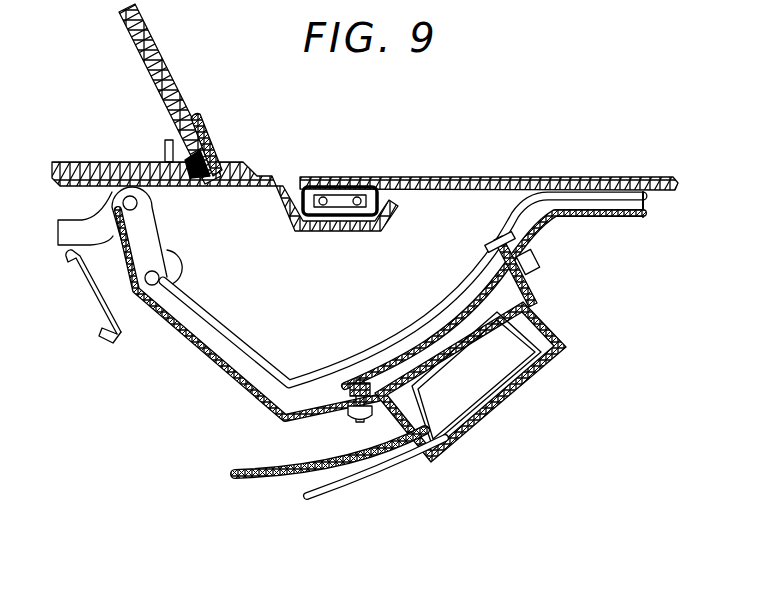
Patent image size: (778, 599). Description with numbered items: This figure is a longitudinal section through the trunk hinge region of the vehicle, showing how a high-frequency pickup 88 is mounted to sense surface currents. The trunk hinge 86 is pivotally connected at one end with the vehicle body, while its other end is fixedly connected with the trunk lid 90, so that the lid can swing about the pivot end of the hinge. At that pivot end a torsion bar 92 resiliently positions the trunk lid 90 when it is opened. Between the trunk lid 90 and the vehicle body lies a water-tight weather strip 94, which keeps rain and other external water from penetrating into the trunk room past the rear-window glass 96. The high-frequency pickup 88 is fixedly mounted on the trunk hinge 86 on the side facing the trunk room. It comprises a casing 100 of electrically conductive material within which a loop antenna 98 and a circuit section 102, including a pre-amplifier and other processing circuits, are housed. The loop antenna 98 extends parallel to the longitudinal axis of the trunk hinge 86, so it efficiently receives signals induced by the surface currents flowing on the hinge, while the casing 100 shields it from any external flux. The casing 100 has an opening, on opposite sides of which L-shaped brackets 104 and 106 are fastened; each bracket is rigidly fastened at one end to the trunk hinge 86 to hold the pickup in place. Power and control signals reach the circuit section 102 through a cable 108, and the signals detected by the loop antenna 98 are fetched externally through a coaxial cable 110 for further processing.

The trunk hinge 86 is at (243, 391).
The high-frequency pickup 88 is at (494, 385).
The trunk lid 90 is at (470, 177).
The torsion bar 92 is at (110, 310).
The weather strip 94 is at (343, 186).
The rear-window glass 96 is at (173, 96).
The loop antenna 98 is at (520, 310).
The casing 100 is at (552, 350).
The circuit section 102 is at (470, 392).
The L-shaped bracket 104 is at (524, 282).
The L-shaped bracket 106 is at (373, 426).
The cable 108 is at (385, 477).
The coaxial cable 110 is at (250, 477).